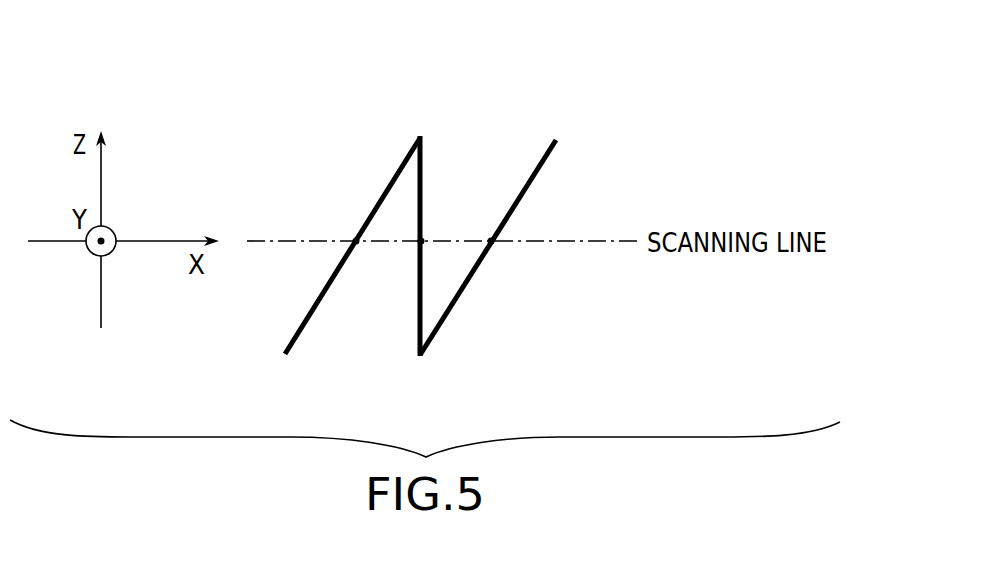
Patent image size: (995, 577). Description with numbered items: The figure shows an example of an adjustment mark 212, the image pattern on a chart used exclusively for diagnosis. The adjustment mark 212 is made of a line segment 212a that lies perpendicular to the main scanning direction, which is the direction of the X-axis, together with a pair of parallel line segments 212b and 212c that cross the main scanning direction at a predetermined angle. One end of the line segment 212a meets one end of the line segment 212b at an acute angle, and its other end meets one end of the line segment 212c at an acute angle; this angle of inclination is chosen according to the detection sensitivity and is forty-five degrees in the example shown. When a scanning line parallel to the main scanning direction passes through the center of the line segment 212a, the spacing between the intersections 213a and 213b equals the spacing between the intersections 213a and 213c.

The adjustment mark 212 is at (407, 276).
The line segment 212a is at (421, 178).
The line segment 212b is at (396, 178).
The line segment 212c is at (540, 165).
The intersection 213a is at (423, 240).
The intersection 213b is at (357, 243).
The intersection 213c is at (492, 243).